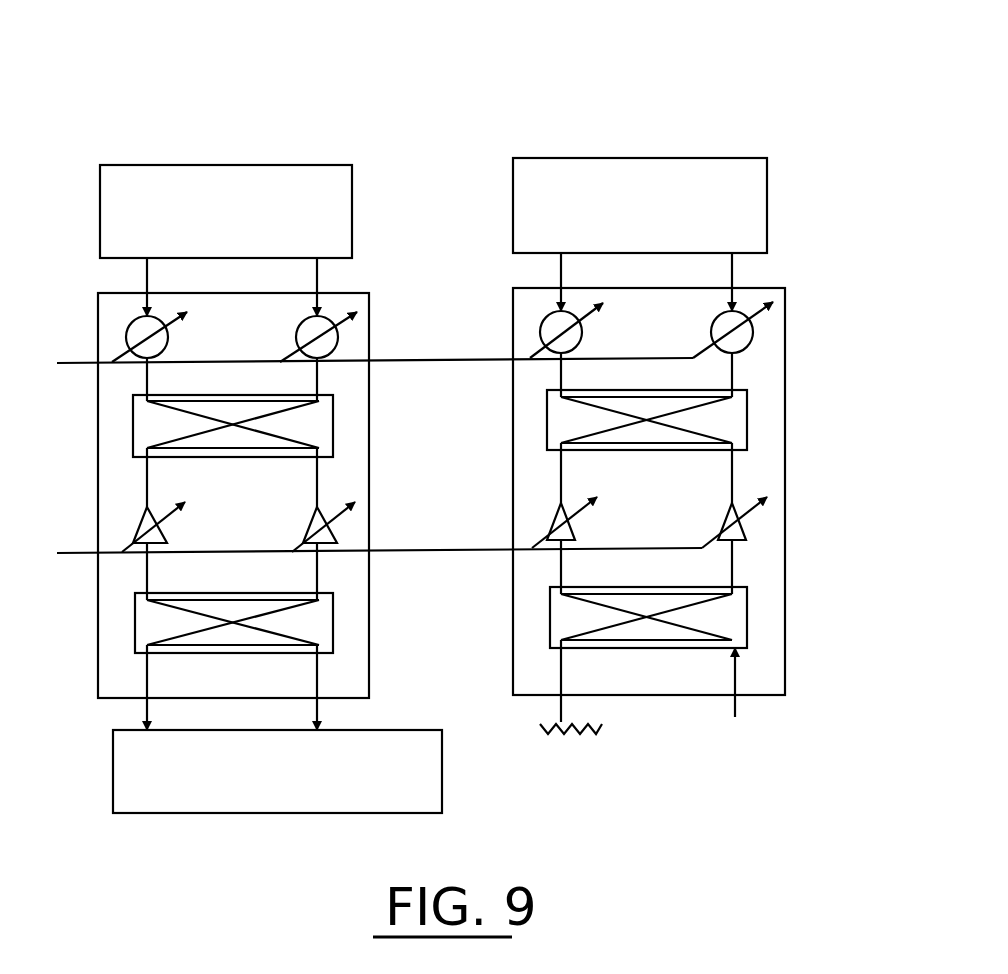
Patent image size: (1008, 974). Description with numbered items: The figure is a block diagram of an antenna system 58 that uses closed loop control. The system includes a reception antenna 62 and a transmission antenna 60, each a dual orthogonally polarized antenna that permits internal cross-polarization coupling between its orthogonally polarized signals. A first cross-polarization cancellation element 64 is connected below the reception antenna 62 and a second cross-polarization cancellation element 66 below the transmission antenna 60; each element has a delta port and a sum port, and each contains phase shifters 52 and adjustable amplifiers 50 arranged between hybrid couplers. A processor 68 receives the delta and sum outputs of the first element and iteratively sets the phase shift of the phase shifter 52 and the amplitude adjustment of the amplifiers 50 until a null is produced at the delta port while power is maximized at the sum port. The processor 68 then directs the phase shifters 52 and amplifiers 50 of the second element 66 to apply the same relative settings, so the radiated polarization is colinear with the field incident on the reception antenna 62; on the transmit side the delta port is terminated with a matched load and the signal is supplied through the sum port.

The antenna system 58 is at (546, 86).
The reception antenna 62 is at (258, 163).
The transmission antenna 60 is at (672, 157).
The first cross-polarization cancellation element 64 is at (370, 375).
The second cross-polarization cancellation element 66 is at (513, 420).
The phase shifter 52 is at (127, 342).
The adjustable amplifier 50 is at (117, 507).
The processor 68 is at (432, 748).